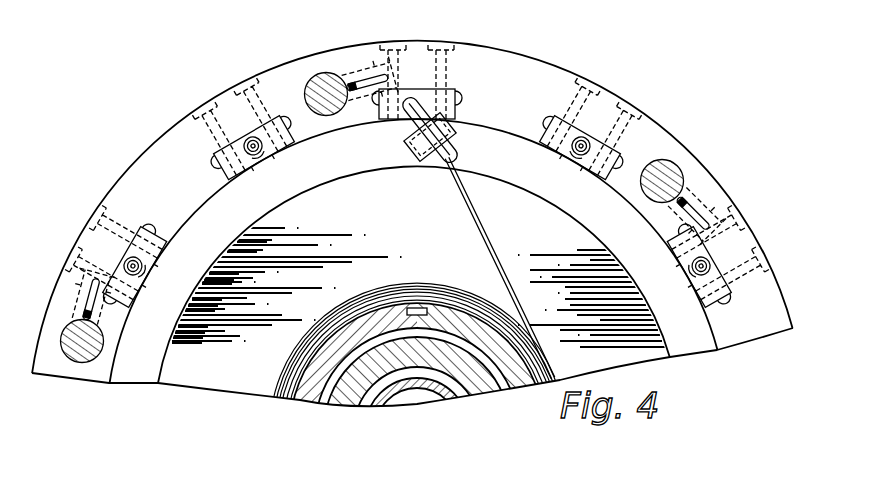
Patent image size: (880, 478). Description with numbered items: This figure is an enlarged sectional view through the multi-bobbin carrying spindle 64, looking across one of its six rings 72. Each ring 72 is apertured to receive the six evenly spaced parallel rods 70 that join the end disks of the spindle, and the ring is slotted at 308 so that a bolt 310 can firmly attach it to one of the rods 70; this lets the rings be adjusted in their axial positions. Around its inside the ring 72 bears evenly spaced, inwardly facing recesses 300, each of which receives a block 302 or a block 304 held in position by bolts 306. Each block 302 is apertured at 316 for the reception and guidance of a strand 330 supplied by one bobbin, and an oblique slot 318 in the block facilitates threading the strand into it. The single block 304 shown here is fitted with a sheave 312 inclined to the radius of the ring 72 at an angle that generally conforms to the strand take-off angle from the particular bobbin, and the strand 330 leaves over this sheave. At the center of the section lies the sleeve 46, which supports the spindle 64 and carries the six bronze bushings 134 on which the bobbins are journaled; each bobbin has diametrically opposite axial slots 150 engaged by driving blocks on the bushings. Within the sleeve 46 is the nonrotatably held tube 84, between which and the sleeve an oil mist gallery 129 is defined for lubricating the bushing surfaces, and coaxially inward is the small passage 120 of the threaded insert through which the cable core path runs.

The ring 72 is at (537, 62).
The multi-bobbin carrying spindle 64 is at (598, 80).
The recess 300 is at (282, 145).
The aperture 316 is at (251, 158).
The oblique slot 318 is at (247, 165).
The block 302 is at (248, 134).
The bolt 306 is at (270, 86).
The rod 70 is at (322, 76).
The slot 308 is at (364, 78).
The bolt 310 is at (384, 122).
The block 304 is at (418, 158).
The sheave 312 is at (456, 161).
The strand 330 is at (501, 257).
The bronze bushing 134 is at (298, 386).
The slot 150 is at (418, 308).
The passage 120 is at (310, 402).
The sleeve 46 is at (348, 395).
The oil mist gallery 129 is at (458, 392).
The tube 84 is at (407, 390).